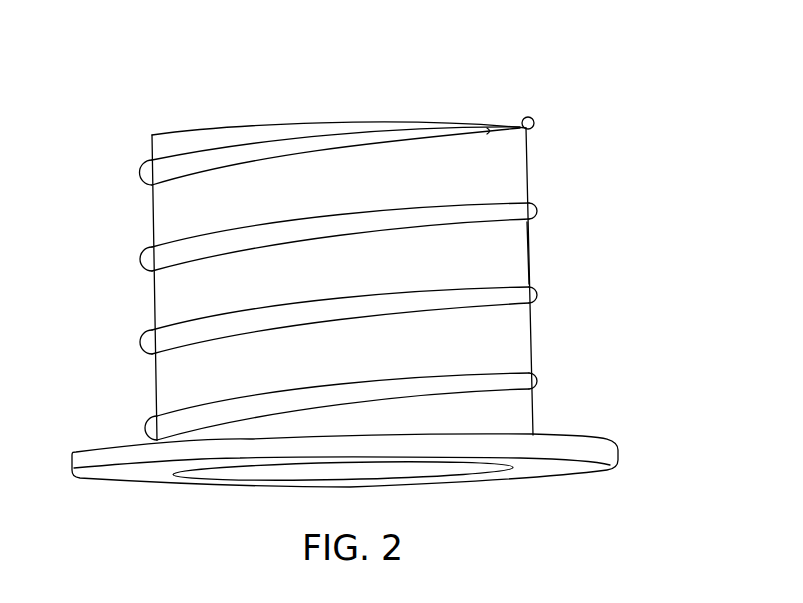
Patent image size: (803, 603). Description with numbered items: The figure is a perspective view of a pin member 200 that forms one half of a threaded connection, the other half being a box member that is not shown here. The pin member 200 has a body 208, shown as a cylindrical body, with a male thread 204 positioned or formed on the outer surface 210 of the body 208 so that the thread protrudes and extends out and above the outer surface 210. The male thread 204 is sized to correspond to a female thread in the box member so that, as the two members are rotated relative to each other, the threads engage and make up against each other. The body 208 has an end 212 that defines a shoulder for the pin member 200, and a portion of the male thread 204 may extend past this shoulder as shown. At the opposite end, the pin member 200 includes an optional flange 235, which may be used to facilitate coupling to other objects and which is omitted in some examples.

The pin member 200 is at (375, 250).
The male thread 204 is at (540, 300).
The body 208 is at (165, 212).
The outer surface 210 is at (532, 253).
The end 212 is at (190, 128).
The flange 235 is at (603, 452).